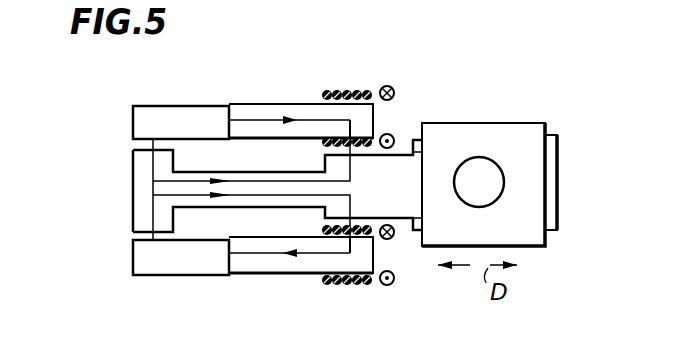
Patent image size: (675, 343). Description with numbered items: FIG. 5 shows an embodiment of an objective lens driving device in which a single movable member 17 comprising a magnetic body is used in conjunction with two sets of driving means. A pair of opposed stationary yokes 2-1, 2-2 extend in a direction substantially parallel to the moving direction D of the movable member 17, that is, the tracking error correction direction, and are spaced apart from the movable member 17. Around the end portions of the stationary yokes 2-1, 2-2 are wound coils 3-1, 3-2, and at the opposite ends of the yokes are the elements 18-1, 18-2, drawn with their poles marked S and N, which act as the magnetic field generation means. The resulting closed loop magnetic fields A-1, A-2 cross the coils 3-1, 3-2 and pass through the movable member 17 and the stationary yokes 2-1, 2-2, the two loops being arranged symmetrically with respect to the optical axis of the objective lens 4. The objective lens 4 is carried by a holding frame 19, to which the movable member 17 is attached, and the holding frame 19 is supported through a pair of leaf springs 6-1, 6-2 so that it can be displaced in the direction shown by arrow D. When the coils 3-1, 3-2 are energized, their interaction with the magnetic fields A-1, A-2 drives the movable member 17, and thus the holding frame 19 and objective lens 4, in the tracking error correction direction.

The first permanent magnet 18-1 is at (188, 104).
The second permanent magnet 18-2 is at (192, 268).
The stationary yoke 2-1 is at (258, 104).
The stationary yoke 2-2 is at (278, 275).
The closed loop magnetic field A-1 is at (305, 118).
The closed loop magnetic field A-2 is at (317, 258).
The coil 3-1 is at (366, 91).
The coil 3-2 is at (381, 290).
The movable member 17 is at (248, 204).
The leaf spring 6-2 is at (412, 138).
The leaf spring 6-1 is at (558, 147).
The holding frame 19 is at (538, 125).
The objective lens 4 is at (486, 158).